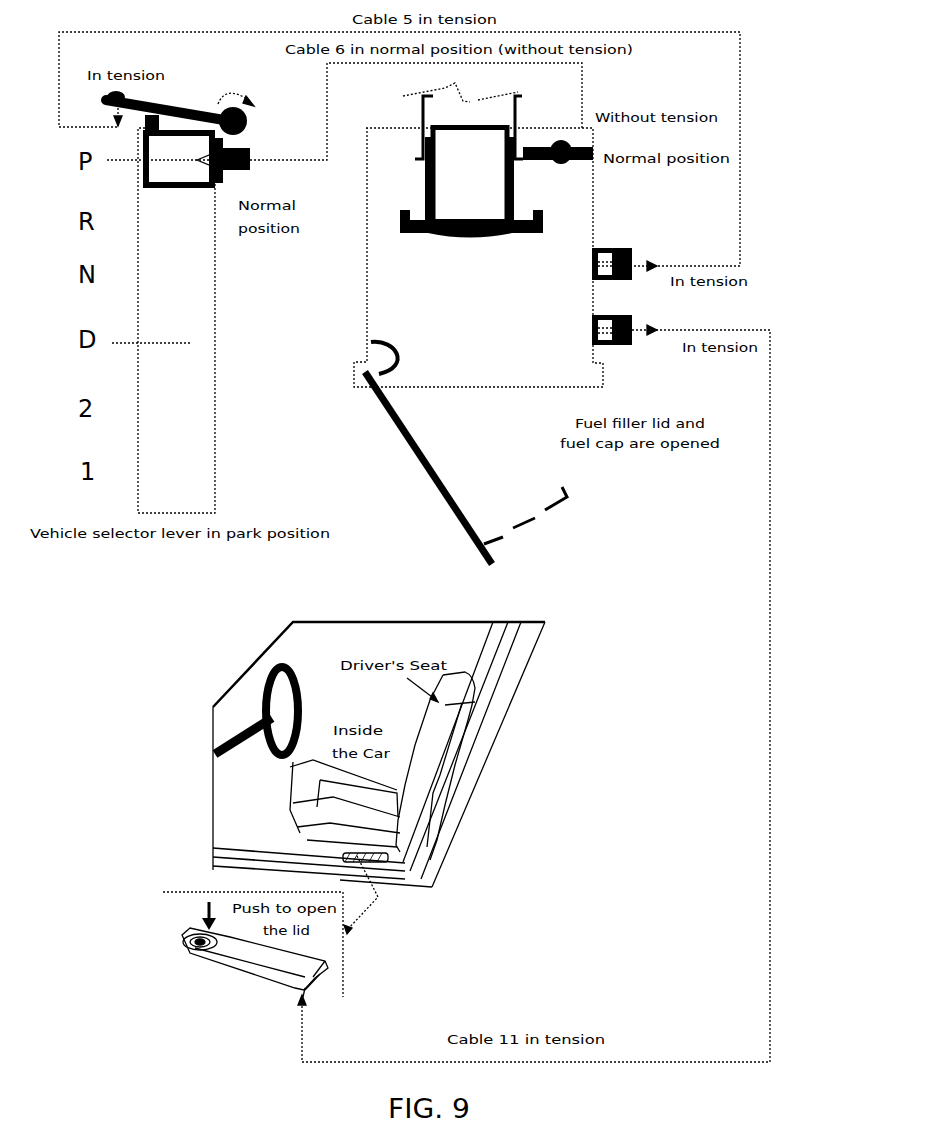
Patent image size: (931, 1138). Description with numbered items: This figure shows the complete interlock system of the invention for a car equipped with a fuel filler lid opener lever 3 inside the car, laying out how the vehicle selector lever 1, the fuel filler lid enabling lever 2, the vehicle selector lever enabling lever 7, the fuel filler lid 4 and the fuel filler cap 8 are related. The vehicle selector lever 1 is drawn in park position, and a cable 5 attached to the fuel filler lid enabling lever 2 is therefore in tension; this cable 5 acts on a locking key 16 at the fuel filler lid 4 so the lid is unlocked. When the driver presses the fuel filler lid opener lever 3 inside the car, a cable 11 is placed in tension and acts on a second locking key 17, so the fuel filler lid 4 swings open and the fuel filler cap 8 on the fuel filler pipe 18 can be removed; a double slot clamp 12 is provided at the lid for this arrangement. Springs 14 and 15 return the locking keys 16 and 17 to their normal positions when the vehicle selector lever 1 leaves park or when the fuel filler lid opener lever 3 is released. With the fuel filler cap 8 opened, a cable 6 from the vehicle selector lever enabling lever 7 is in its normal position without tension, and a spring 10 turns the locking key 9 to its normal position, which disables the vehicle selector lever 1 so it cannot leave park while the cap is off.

The vehicle selector lever 1 is at (158, 186).
The fuel filler lid enabling lever 2 is at (160, 105).
The fuel filler lid opener lever 3 is at (183, 938).
The fuel filler lid 4 is at (433, 457).
The cable 5 is at (110, 102).
The cable 6 is at (433, 123).
The vehicle selector lever enabling lever 7 is at (537, 162).
The fuel filler cap 8 is at (455, 240).
The locking key 9 is at (165, 167).
The spring 10 is at (243, 148).
The cable 11 is at (534, 693).
The double slot clamp 12 is at (518, 524).
The spring 14 is at (626, 246).
The spring 15 is at (634, 303).
The locking key 16 is at (600, 266).
The locking key 17 is at (590, 329).
The fuel filler pipe 18 is at (414, 109).